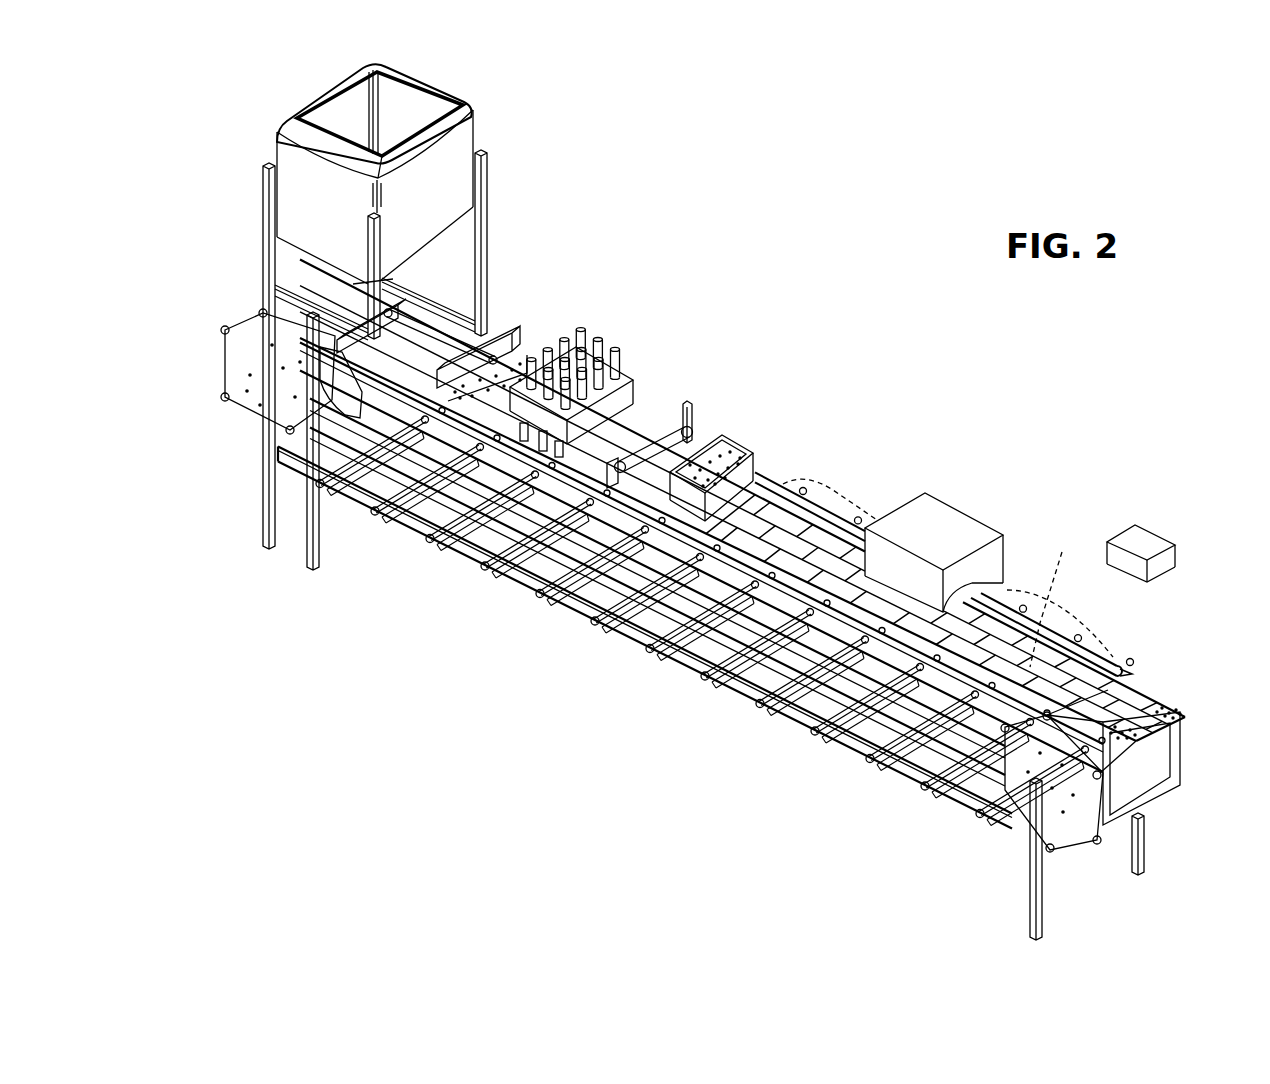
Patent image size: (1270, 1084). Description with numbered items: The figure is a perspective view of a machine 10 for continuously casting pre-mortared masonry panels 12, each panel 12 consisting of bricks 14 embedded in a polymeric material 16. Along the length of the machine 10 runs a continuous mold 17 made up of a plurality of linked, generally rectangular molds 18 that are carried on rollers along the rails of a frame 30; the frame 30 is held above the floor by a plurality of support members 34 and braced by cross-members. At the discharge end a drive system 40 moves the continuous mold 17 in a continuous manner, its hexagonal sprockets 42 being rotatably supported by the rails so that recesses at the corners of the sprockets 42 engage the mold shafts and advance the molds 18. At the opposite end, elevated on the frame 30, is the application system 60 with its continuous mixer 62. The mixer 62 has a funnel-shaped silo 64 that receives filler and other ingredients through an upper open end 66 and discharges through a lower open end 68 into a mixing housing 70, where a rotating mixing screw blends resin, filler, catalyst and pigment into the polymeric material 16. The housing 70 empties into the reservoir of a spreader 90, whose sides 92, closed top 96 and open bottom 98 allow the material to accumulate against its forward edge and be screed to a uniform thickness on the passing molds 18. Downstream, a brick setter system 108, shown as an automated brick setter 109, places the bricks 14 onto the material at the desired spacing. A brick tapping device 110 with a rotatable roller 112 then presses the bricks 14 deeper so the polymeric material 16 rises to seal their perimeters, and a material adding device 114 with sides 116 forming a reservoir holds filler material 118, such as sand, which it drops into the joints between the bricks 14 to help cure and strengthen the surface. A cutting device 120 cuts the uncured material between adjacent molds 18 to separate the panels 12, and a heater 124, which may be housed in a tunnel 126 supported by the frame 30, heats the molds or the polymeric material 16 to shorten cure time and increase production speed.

The machine 10 is at (733, 260).
The pre-mortared masonry panel 12 is at (1160, 688).
The bricks 14 is at (1165, 700).
The polymeric material 16 is at (1190, 708).
The continuous mold 17 is at (1060, 617).
The molds 18 is at (823, 497).
The frame 30 is at (260, 508).
The support members 34 is at (308, 540).
The drive system 40 is at (1077, 852).
The sprockets 42 is at (232, 355).
The application system 60 is at (447, 330).
The continuous mixer 62 is at (479, 118).
The silo 64 is at (433, 93).
The upper open end 66 is at (398, 92).
The lower open end 68 is at (437, 255).
The mixing housing 70 is at (337, 393).
The spreader 90 is at (502, 331).
The sides 92 is at (487, 345).
The closed top 96 is at (443, 332).
The open bottom 98 is at (430, 387).
The brick setter system 108 is at (592, 377).
The automated brick setter 109 is at (628, 390).
The brick tapping device 110 is at (693, 405).
The roller 112 is at (655, 445).
The material adding device 114 is at (748, 452).
The sides 116 is at (757, 480).
The material 118 is at (722, 445).
The cutting device 120 is at (1145, 523).
The heater 124 is at (967, 512).
The tunnel 126 is at (948, 573).